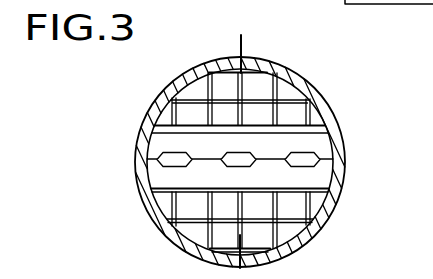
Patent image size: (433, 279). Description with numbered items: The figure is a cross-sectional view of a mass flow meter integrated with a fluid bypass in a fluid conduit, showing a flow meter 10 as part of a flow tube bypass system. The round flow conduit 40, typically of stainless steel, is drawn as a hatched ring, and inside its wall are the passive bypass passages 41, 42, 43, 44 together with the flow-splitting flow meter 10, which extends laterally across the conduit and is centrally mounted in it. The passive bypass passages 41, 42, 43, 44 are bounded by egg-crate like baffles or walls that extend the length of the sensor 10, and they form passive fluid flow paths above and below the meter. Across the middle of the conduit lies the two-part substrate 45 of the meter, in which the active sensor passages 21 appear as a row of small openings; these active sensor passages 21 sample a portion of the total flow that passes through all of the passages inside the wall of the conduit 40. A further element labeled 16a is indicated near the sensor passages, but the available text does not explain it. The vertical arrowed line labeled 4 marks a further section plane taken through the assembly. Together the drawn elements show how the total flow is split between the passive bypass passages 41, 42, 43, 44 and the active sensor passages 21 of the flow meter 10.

The flow meter 10 is at (274, 178).
The partition plate 16a is at (304, 166).
The active sensor passages 21 is at (157, 158).
The flow conduit 40 is at (315, 100).
The passive bypass passage 41 is at (227, 88).
The passive bypass passage 42 is at (188, 118).
The passive bypass passage 43 is at (190, 197).
The passive bypass passage 44 is at (222, 232).
The two-part substrate 45 is at (296, 196).
The section line 4- 4 is at (245, 46).